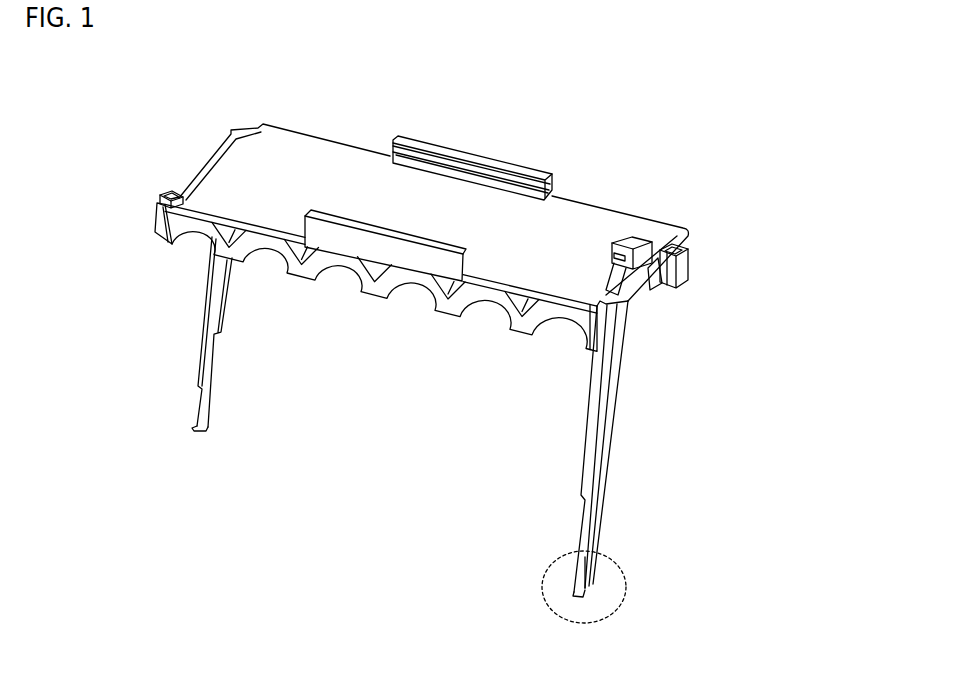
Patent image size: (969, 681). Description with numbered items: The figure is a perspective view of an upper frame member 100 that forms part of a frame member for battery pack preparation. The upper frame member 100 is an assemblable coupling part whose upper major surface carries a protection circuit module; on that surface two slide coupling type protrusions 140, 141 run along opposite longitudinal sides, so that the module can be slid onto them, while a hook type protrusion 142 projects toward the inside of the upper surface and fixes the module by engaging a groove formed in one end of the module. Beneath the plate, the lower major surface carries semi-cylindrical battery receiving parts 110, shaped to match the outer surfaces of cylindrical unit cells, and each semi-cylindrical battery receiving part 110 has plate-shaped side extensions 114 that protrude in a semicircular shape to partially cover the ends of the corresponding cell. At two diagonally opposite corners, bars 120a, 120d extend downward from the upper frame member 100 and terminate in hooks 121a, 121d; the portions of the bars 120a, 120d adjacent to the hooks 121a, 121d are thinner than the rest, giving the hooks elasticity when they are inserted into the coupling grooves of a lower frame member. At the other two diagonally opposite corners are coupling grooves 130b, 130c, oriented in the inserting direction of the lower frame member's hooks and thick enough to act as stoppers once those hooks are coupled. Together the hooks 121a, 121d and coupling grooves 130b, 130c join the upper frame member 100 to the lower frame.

The upper frame member 100 is at (62, 89).
The semi-cylindrical battery receiving part 110 is at (479, 331).
The plate-shaped side extension 114 is at (387, 289).
The bar 120a is at (203, 333).
The hook 121a is at (193, 421).
The bar 120d is at (618, 416).
The hook 121d is at (592, 585).
The coupling groove 130b is at (695, 274).
The coupling groove 130c is at (173, 193).
The slide coupling type protrusion 140 is at (446, 147).
The slide coupling type protrusion 141 is at (407, 236).
The hook type protrusion 142 is at (648, 243).